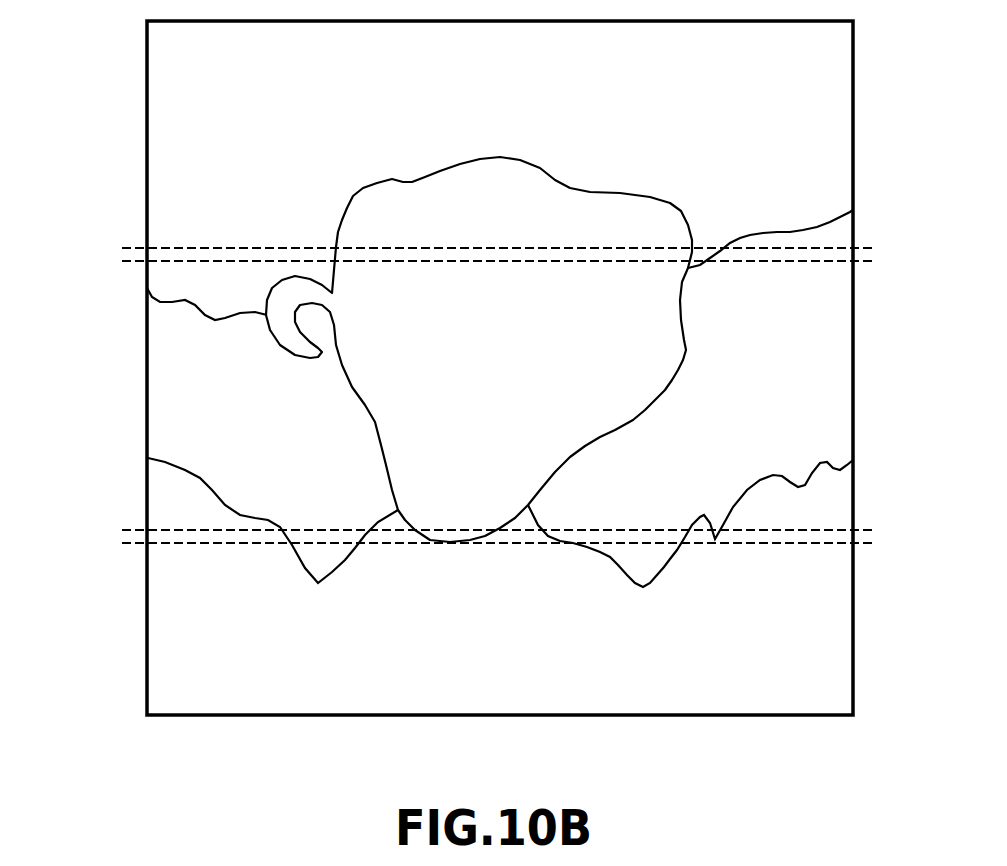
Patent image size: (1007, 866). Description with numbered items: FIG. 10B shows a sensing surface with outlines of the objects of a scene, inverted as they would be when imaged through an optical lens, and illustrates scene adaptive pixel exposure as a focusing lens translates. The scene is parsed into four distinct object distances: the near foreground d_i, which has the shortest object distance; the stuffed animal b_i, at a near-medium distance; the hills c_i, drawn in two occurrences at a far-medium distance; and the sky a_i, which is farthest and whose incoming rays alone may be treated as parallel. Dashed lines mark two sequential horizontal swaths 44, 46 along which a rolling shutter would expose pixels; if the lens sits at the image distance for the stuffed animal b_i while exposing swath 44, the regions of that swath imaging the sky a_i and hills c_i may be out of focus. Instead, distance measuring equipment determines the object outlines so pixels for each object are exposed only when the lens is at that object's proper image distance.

The horizontal swath 44 is at (122, 541).
The horizontal swath 46 is at (120, 257).
The sky object ai is at (690, 551).
The stuffed animal object bi is at (479, 349).
The hills object ci is at (457, 435).
The near foreground object di is at (770, 193).